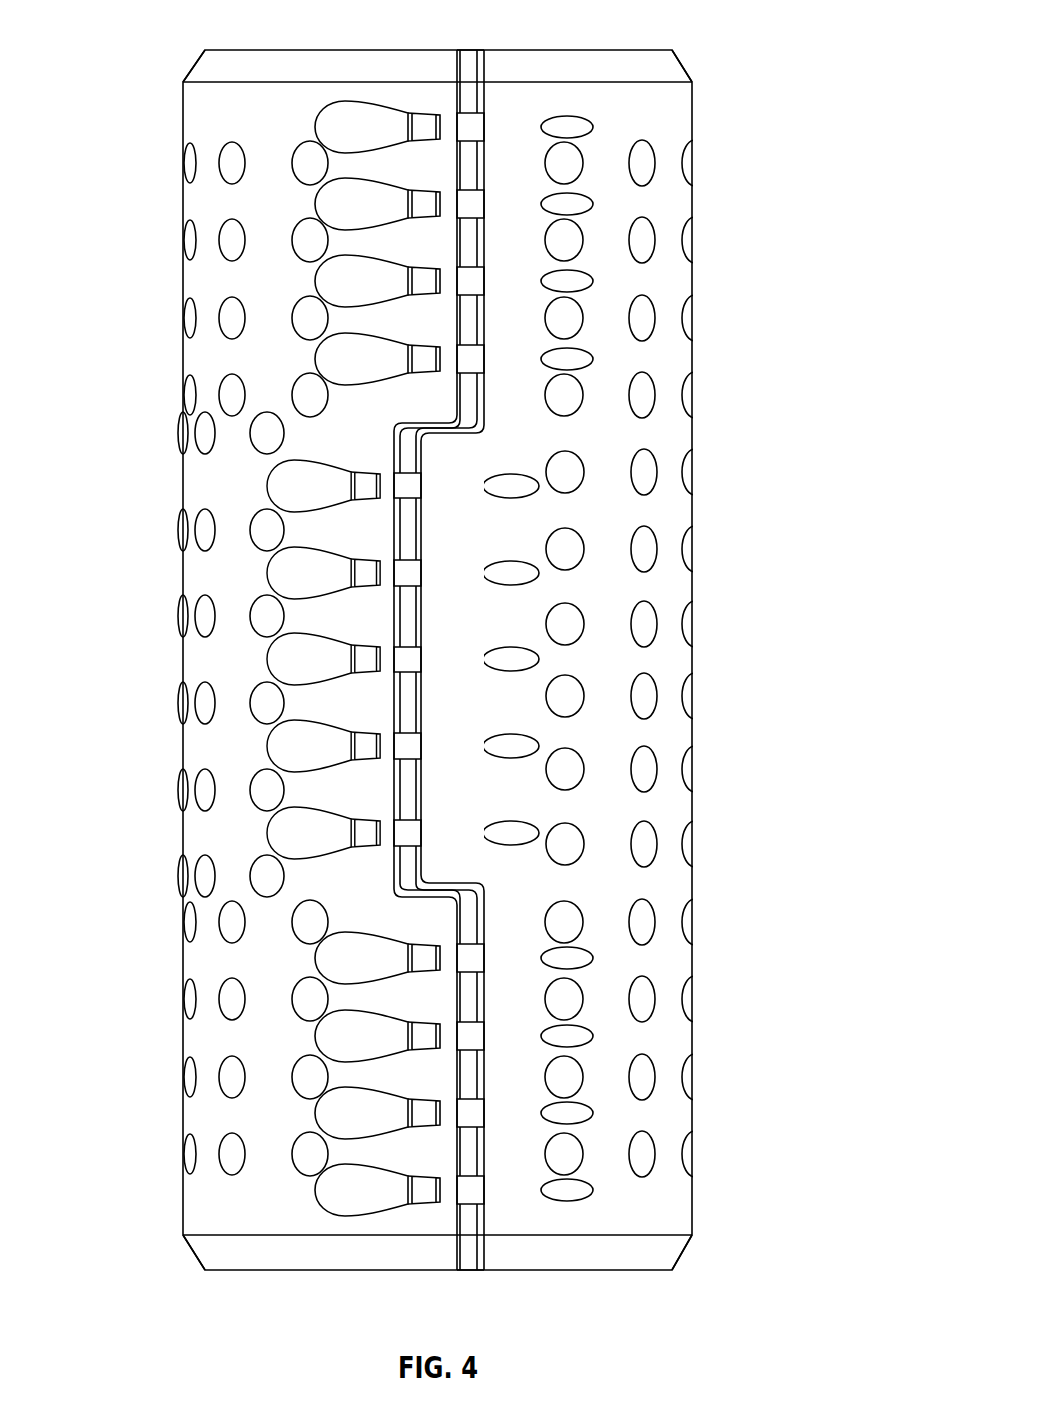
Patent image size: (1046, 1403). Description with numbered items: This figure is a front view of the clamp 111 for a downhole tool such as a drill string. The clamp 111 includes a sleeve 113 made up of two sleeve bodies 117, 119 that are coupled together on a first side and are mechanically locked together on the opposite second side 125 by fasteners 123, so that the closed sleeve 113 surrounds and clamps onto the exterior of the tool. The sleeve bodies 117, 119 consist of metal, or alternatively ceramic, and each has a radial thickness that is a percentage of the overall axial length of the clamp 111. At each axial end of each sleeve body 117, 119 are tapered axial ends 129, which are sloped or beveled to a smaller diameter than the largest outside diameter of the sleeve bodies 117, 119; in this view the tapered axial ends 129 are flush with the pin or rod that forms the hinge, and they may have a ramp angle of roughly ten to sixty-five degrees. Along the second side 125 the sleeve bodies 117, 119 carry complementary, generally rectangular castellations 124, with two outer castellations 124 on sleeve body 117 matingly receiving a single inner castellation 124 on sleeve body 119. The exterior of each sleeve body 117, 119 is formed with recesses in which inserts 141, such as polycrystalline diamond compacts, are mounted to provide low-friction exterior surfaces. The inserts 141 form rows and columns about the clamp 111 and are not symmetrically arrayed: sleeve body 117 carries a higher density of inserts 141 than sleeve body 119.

The clamp 111 is at (110, 40).
The sleeve 113 is at (126, 593).
The sleeve body 117 is at (207, 112).
The sleeve body 119 is at (680, 110).
The fasteners 123 is at (410, 128).
The castellations 124 is at (462, 152).
The second side 125 is at (470, 1257).
The tapered axial ends 129 is at (207, 70).
The inserts 141 is at (563, 158).